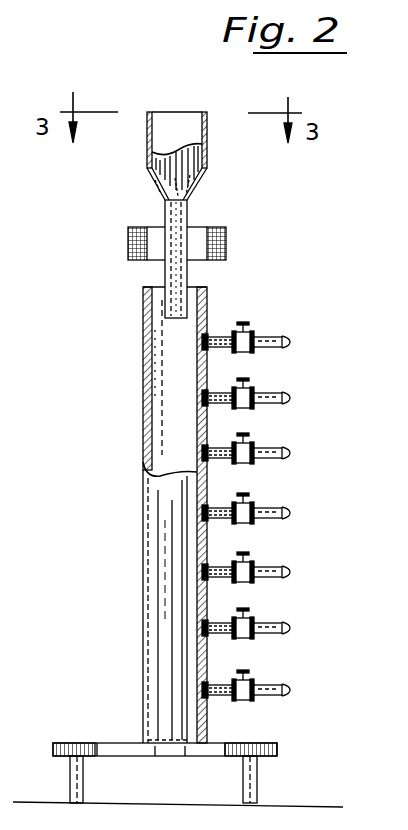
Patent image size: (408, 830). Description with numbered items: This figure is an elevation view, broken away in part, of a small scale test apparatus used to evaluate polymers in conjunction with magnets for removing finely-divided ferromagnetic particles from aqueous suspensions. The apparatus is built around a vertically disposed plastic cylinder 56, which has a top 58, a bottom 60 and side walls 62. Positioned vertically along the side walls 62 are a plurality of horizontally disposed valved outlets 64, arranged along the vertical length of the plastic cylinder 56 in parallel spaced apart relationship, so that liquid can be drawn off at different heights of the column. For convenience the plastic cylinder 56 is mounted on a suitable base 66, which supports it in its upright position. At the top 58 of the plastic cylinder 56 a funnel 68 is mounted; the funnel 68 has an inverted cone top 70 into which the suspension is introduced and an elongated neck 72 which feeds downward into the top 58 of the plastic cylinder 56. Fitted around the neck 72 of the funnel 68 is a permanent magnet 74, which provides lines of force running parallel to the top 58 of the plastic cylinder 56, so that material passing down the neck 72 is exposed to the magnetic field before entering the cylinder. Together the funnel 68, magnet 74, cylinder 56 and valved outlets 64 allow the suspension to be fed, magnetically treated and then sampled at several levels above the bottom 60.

The plastic cylinder 56 is at (182, 442).
The top 58 is at (190, 286).
The bottom 60 is at (158, 740).
The side walls 62 is at (147, 365).
The valved outlets 64 is at (267, 393).
The base 66 is at (263, 747).
The funnel 68 is at (207, 163).
The inverted cone top 70 is at (160, 112).
The elongated neck 72 is at (172, 272).
The permanent magnet 74 is at (228, 240).